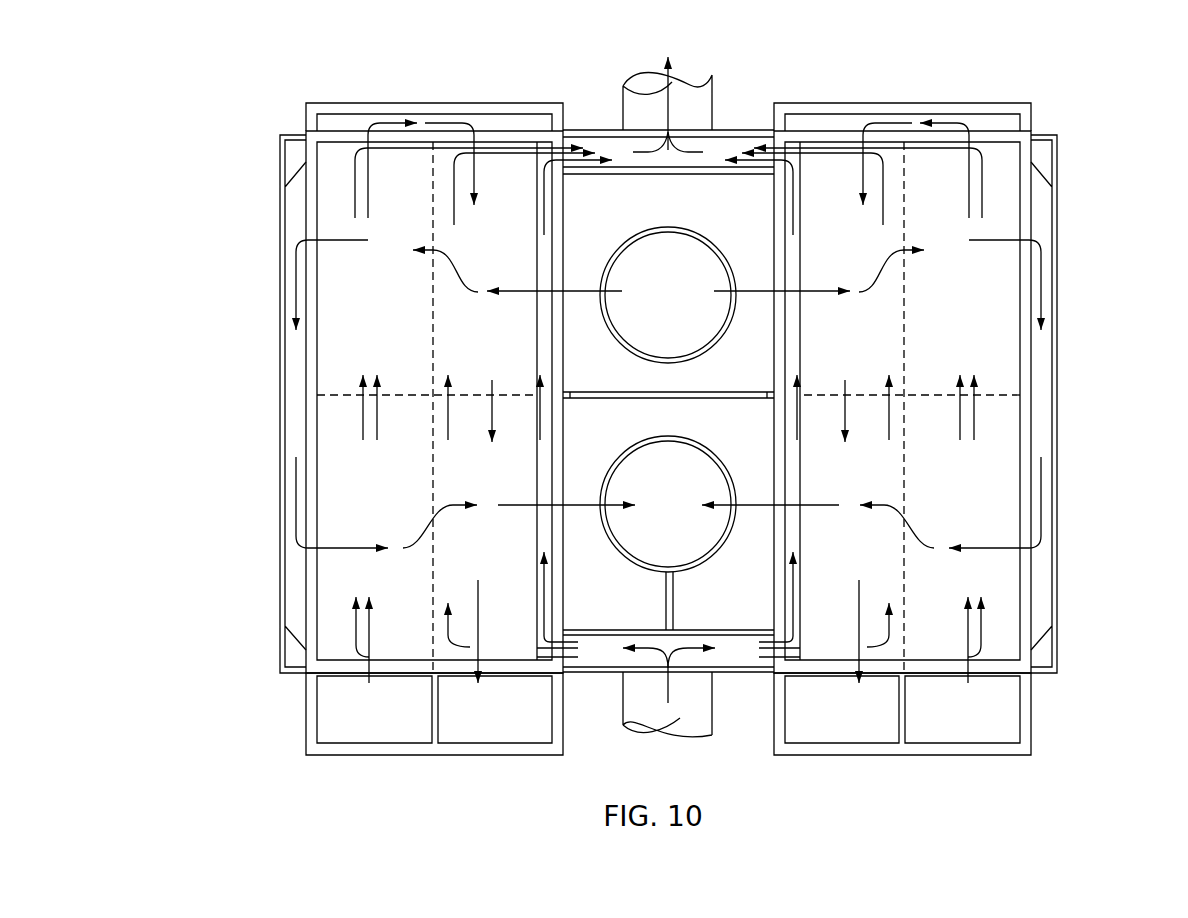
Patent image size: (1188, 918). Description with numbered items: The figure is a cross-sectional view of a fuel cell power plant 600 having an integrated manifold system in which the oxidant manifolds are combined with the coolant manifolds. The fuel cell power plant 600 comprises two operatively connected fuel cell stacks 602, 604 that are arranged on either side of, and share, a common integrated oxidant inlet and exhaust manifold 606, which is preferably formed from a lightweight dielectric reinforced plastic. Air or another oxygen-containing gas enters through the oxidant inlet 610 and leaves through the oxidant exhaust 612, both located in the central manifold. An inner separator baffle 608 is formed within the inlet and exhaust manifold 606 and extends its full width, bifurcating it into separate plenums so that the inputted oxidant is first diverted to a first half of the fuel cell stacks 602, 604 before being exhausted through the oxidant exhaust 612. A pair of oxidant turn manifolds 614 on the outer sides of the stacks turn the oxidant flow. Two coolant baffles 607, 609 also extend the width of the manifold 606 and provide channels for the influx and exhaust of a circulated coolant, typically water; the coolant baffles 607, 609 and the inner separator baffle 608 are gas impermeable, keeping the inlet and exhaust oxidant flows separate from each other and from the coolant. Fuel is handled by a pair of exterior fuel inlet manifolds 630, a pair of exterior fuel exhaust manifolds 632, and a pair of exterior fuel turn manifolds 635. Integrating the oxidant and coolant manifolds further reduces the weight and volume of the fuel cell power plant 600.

The fuel cell power plant 600 is at (283, 73).
The fuel cell stack 602 is at (430, 98).
The fuel cell stack 604 is at (867, 80).
The integrated oxidant inlet and exhaust manifold 606 is at (745, 118).
The coolant baffle 607 is at (650, 183).
The inner separator baffle 608 is at (643, 387).
The coolant baffle 609 is at (645, 622).
The oxidant inlet 610 is at (678, 250).
The oxidant exhaust 612 is at (642, 472).
The oxidant turn manifold 614 is at (265, 224).
The exterior fuel inlet manifold 630 is at (380, 725).
The exterior fuel exhaust manifold 632 is at (502, 727).
The exterior fuel turn manifold 635 is at (362, 98).